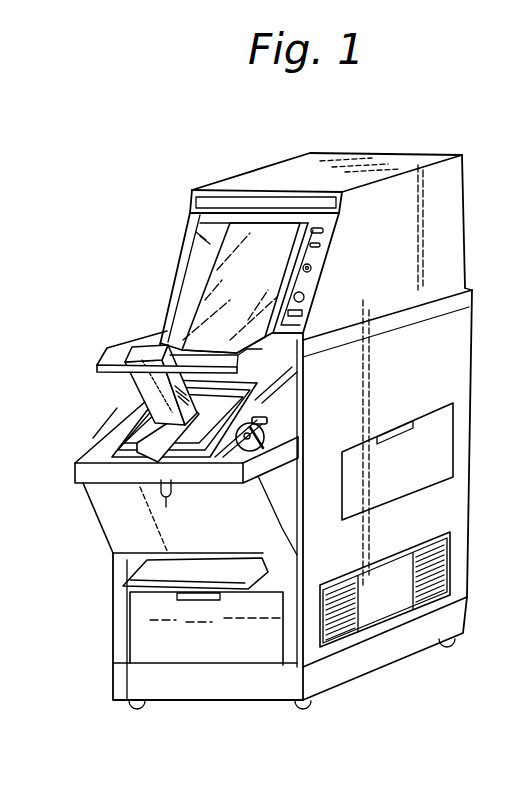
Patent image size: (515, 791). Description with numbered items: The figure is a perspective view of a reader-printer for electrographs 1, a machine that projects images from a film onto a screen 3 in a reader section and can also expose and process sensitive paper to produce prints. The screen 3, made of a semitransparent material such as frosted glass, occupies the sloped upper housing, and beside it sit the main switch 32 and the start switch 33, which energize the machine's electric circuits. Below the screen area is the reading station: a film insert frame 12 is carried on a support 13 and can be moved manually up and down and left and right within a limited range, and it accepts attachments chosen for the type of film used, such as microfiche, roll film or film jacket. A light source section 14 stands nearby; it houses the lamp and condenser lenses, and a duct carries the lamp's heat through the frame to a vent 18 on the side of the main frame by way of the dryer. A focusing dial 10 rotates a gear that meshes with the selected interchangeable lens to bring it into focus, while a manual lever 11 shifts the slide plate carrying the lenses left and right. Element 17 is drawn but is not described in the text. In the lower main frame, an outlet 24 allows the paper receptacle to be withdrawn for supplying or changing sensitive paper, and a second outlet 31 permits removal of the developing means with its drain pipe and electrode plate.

The reader-printer for electrographs 1 is at (455, 198).
The screen 3 is at (190, 304).
The focusing dial 10 is at (263, 422).
The manual lever 11 is at (166, 500).
The film insert frame 12 is at (147, 428).
The support 13 is at (122, 450).
The light source section 14 is at (140, 377).
The support shelf 17 is at (104, 362).
The vent 18 is at (436, 566).
The outlet 24 is at (460, 441).
The outlet 31 is at (226, 656).
The main switch 32 is at (302, 312).
The start switch 33 is at (253, 447).